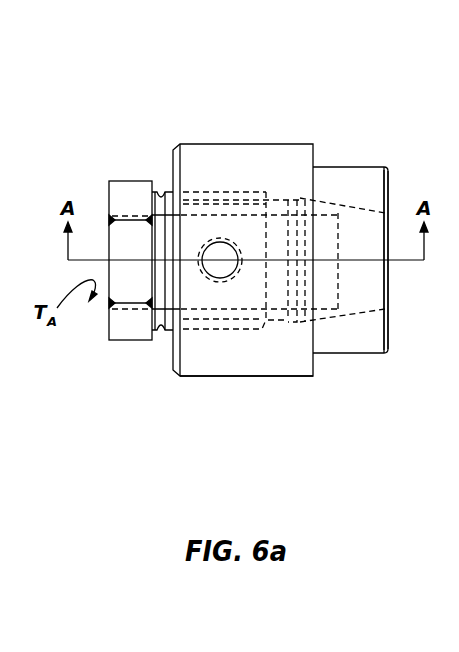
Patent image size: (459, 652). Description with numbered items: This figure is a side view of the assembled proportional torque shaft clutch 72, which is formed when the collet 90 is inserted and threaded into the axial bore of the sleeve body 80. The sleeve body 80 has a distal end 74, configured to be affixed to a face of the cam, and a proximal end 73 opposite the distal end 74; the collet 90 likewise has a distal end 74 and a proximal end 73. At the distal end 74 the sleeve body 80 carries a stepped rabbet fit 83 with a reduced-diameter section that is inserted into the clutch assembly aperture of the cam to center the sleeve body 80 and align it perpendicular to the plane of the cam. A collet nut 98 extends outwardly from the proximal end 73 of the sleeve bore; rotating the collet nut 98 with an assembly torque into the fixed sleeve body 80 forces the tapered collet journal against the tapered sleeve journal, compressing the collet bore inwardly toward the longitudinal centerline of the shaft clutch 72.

The proportional torque shaft clutch 72 is at (212, 108).
The proximal end 73 is at (112, 264).
The distal end 74 is at (404, 179).
The sleeve body 80 is at (251, 377).
The rabbet fit 83 is at (344, 139).
The collet 90 is at (162, 333).
The collet nut 98 is at (113, 342).